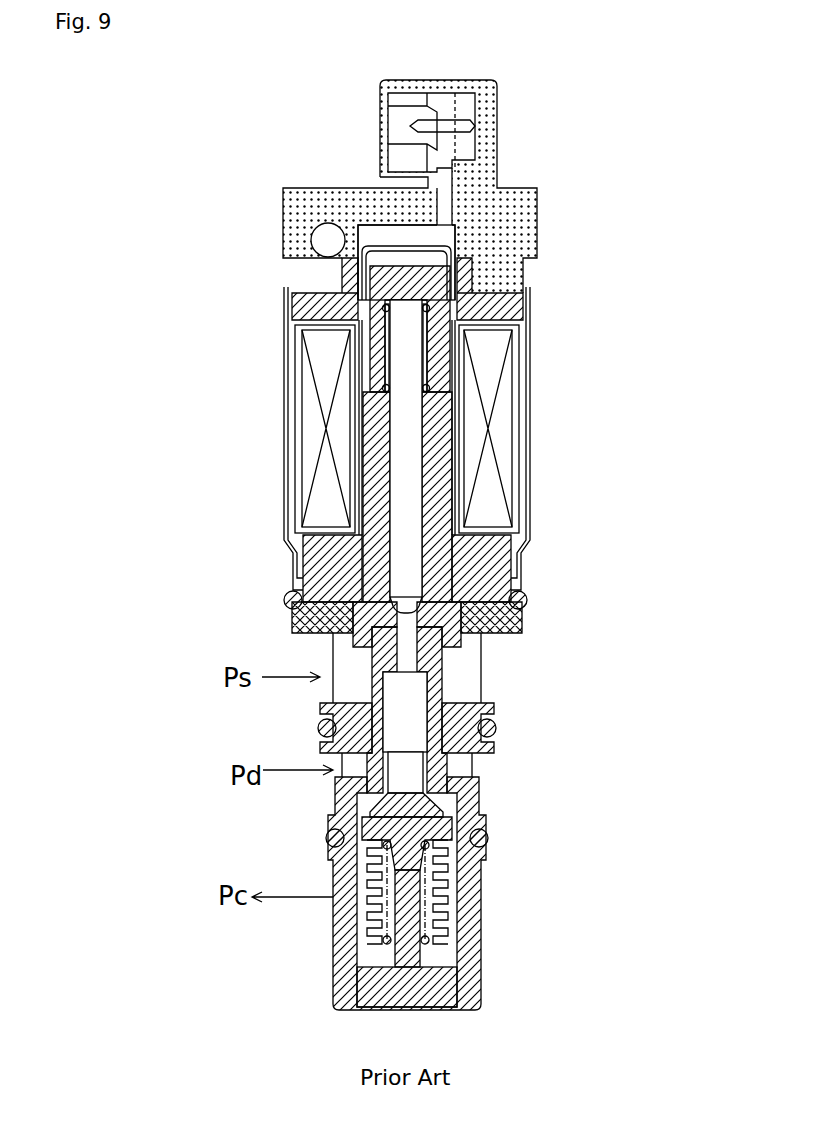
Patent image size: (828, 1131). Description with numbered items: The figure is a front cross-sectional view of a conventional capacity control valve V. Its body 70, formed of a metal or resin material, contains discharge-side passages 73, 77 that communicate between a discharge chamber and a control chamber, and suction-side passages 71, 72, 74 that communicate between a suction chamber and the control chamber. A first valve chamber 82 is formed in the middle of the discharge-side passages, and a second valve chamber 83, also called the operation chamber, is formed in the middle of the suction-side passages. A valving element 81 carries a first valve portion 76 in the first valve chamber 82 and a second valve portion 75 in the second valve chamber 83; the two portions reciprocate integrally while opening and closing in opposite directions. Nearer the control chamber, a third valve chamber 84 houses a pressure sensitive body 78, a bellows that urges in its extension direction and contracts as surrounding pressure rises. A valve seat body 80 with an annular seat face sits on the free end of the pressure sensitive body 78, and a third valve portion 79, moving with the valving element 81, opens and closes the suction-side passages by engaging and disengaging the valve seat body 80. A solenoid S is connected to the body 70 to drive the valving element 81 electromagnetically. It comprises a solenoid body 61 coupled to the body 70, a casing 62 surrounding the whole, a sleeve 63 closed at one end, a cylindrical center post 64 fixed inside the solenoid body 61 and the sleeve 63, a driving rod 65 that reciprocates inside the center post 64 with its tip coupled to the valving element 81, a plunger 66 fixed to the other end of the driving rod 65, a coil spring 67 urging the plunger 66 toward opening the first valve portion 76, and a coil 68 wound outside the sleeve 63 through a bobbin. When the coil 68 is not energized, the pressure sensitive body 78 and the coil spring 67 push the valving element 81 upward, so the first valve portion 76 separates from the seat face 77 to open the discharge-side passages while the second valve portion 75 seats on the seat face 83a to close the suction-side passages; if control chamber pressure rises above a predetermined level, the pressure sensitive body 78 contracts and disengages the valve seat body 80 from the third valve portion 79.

The capacity control valve V is at (193, 234).
The solenoid S is at (278, 437).
The solenoid body 61 is at (305, 562).
The casing 62 is at (289, 492).
The sleeve 63 is at (383, 244).
The center post 64 is at (447, 490).
The driving rod 65 is at (417, 550).
The plunger 66 is at (446, 343).
The coil spring 67 is at (446, 380).
The coil 68 is at (492, 445).
The body 70 is at (333, 705).
The suction-side passage 71 is at (342, 684).
The suction-side passage 72 is at (322, 612).
The discharge-side passage 73 is at (340, 775).
The suction-side passage 74 is at (335, 902).
The second valve portion 75 is at (443, 668).
The first valve portion 76 is at (332, 748).
The seat face 77 is at (482, 782).
The pressure sensitive body 78 is at (380, 938).
The third valve portion 79 is at (488, 820).
The valve seat body 80 is at (425, 866).
The valving element 81 is at (485, 712).
The first valve chamber 82 is at (490, 772).
The second valve chamber 83 is at (430, 690).
The seat face 83a is at (478, 625).
The third valve chamber 84 is at (365, 880).